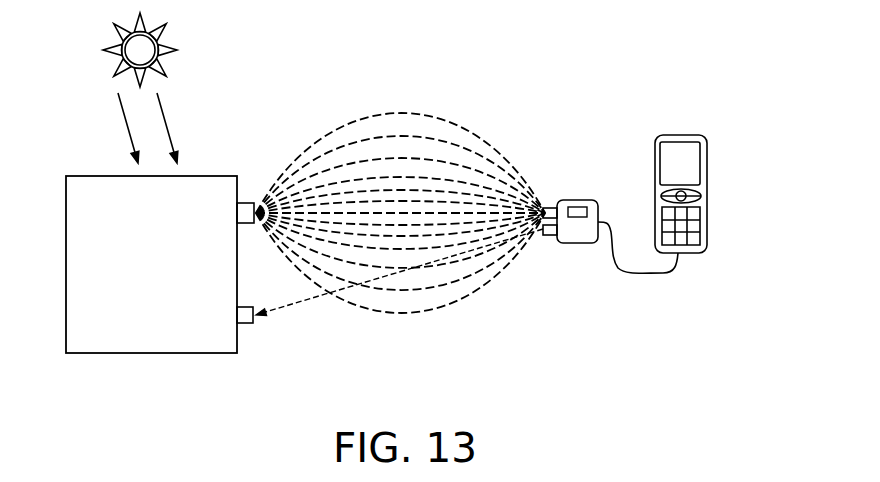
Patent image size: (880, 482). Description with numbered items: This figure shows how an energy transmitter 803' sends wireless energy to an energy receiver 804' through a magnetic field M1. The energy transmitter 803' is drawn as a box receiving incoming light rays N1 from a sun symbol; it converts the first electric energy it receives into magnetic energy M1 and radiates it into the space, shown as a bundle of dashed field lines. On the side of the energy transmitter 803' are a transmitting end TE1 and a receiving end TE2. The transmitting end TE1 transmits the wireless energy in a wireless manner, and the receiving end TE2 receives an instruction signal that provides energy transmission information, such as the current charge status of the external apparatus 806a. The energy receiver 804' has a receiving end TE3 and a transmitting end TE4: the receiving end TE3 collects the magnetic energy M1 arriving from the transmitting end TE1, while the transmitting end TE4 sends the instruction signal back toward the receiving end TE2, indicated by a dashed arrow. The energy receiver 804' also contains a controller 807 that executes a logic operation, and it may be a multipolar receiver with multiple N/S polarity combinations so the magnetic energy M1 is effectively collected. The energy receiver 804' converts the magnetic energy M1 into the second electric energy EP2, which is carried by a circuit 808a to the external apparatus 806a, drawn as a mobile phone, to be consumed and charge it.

The energy transmitter 803' is at (131, 232).
The light rays N1 is at (155, 128).
The transmitting end TE1 is at (248, 203).
The receiving end TE2 is at (245, 323).
The magnetic field M1 is at (458, 124).
The receiving end TE3 is at (550, 208).
The transmitting end TE4 is at (549, 237).
The energy receiver 804' is at (589, 176).
The controller 807 is at (582, 217).
The external apparatus 806a is at (707, 172).
The second electric energy EP2 is at (684, 214).
The circuit 808a is at (638, 273).